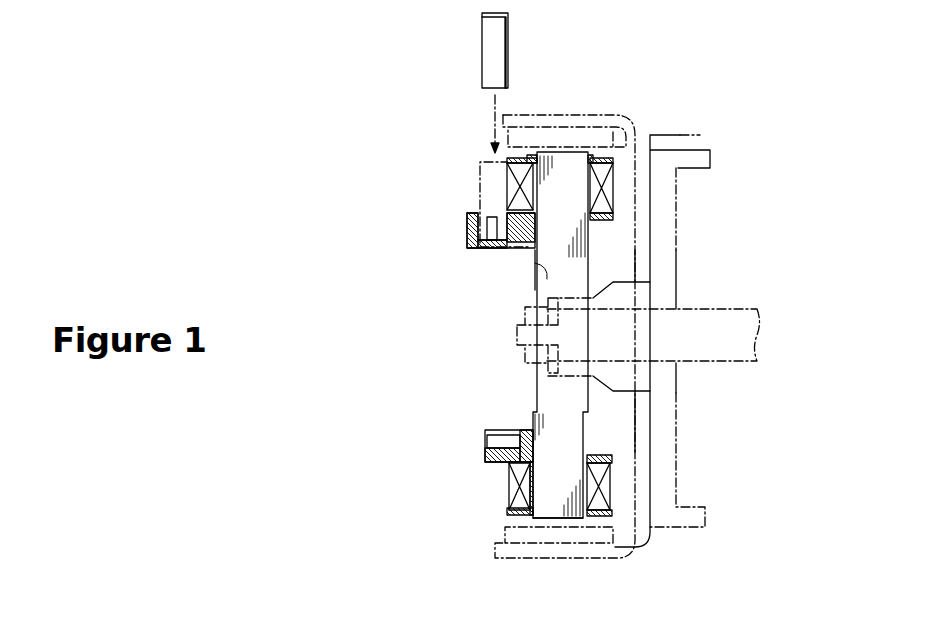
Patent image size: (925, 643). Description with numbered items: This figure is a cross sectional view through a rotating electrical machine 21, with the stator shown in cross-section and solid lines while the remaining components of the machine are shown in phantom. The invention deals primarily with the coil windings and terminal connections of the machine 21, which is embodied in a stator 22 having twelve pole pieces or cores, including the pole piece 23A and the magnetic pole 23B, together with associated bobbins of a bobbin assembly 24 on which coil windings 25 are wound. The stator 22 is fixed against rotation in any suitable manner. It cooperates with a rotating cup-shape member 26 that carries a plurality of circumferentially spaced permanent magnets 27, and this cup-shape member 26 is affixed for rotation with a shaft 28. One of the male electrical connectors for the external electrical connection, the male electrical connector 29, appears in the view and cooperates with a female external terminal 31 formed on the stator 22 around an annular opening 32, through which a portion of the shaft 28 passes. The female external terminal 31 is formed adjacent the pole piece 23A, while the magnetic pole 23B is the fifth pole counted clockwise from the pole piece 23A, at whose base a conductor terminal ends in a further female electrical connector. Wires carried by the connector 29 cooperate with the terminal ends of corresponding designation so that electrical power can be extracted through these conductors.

The rotating electrical machine 21 is at (484, 468).
The stator 22 is at (482, 455).
The pole piece 23A is at (568, 160).
The magnetic pole 23B is at (543, 510).
The bobbin assembly 24 is at (605, 449).
The coil windings 25 is at (613, 190).
The cup-shape member 26 is at (700, 133).
The permanent magnets 27 is at (618, 114).
The shaft 28 is at (735, 308).
The male electrical connector 29 is at (480, 41).
The female external terminal 31 is at (465, 219).
The annular opening 32 is at (535, 272).